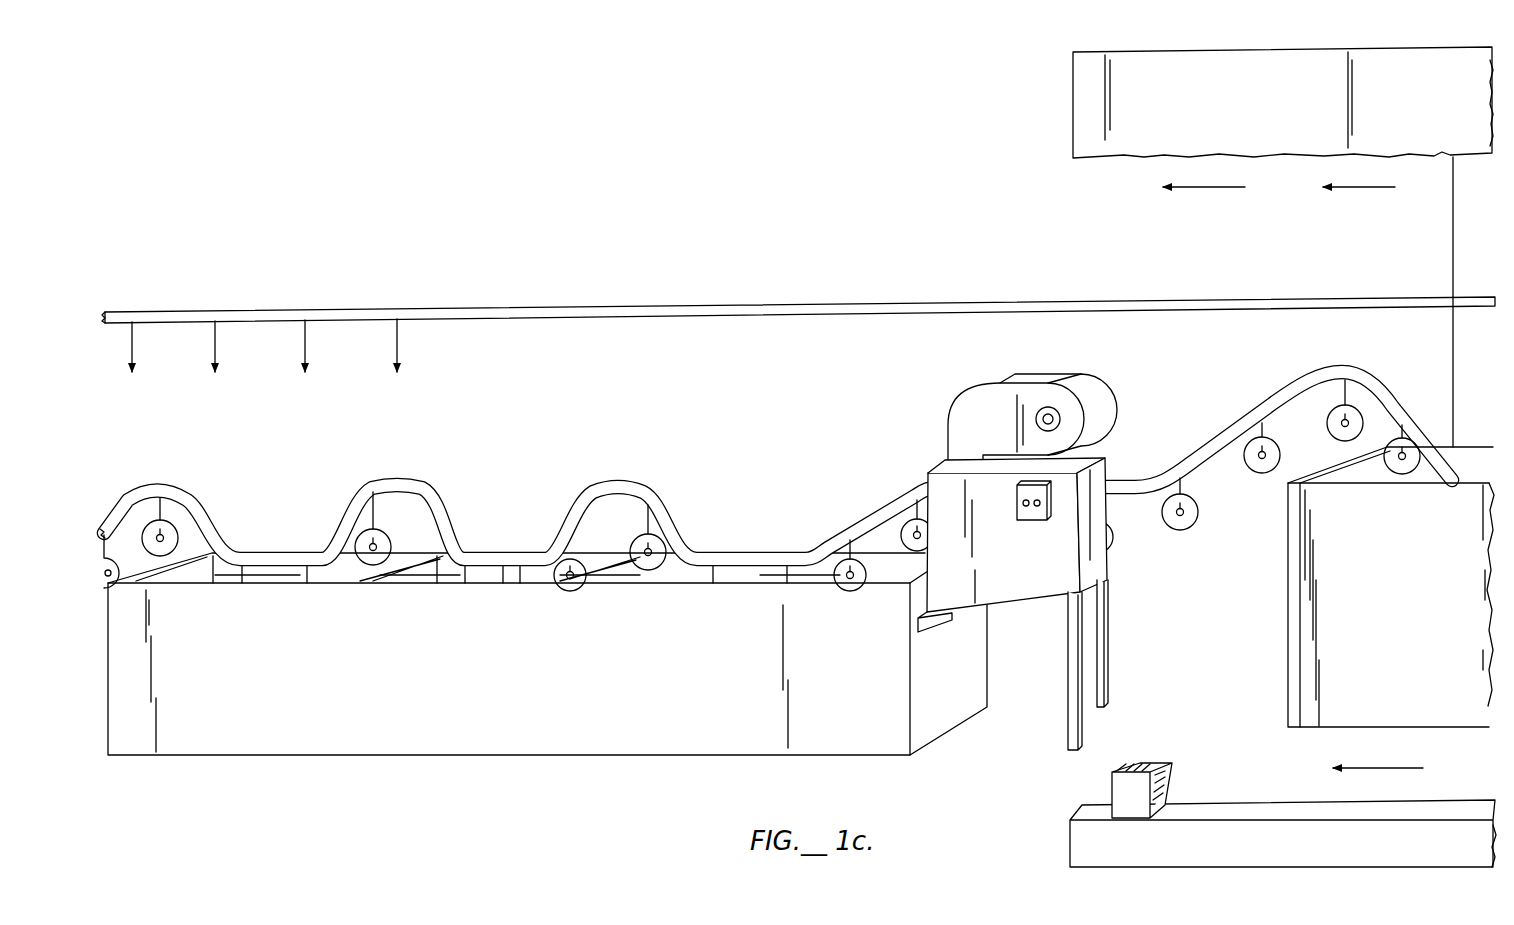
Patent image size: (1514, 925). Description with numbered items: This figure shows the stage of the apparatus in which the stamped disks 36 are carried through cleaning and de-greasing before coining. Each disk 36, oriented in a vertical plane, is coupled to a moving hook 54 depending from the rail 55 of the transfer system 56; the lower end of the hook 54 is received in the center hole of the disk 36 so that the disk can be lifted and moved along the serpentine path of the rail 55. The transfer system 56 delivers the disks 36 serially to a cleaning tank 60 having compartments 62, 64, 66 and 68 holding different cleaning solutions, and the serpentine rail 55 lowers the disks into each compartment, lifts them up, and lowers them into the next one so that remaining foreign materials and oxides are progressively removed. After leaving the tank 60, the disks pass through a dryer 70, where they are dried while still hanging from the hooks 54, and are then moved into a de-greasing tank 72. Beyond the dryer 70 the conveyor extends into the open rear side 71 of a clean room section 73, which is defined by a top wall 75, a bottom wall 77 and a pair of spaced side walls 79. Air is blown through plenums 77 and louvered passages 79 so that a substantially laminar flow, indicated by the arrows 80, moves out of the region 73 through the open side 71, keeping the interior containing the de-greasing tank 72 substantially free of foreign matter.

The disk 36 is at (178, 538).
The hook 54 is at (213, 352).
The rail 55 is at (376, 482).
The transfer system 56 is at (420, 487).
The cleaning tank 60 is at (640, 760).
The compartment 62 is at (268, 578).
The compartment 64 is at (420, 578).
The compartment 66 is at (597, 578).
The compartment 68 is at (803, 578).
The dryer 70 is at (1015, 610).
The open rear side 71 is at (1074, 242).
The de-greasing tank 72 is at (1285, 714).
The clean room section 73 is at (1291, 247).
The top wall 75 is at (1360, 55).
The bottom wall 77 is at (1247, 853).
The side wall 79 is at (1112, 795).
The air flow arrows 80 is at (1214, 188).